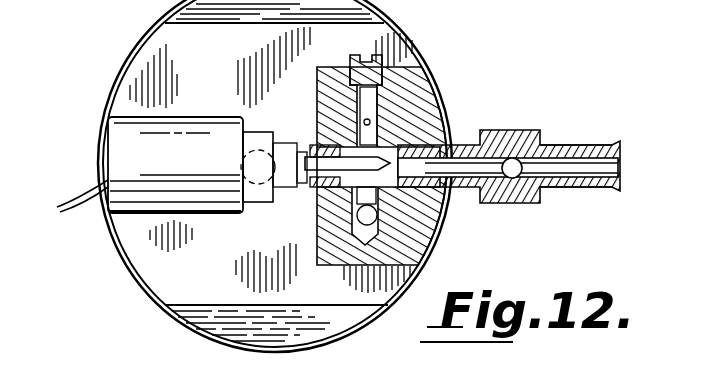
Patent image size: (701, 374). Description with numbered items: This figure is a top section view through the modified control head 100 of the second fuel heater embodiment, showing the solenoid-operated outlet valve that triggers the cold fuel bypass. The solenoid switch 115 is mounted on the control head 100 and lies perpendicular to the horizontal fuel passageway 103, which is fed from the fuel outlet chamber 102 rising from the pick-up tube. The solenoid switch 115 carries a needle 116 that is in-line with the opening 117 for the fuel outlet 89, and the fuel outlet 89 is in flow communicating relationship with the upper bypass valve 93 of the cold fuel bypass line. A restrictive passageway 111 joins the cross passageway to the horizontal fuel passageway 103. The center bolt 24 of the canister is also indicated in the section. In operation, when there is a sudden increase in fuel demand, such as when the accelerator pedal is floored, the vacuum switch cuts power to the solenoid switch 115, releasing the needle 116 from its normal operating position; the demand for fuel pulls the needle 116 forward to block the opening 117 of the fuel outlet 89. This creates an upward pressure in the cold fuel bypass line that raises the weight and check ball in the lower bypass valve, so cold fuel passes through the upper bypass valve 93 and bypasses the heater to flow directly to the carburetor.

The control head 100 is at (133, 41).
The solenoid switch 115 is at (130, 163).
The center bolt 24 is at (258, 204).
The fuel outlet chamber 102 is at (433, 248).
The horizontal fuel passageway 103 is at (372, 97).
The restrictive passageway 111 is at (370, 118).
The opening 117 is at (437, 147).
The fuel outlet 89 is at (594, 170).
The upper bypass valve 93 is at (527, 165).
The needle 116 is at (440, 205).